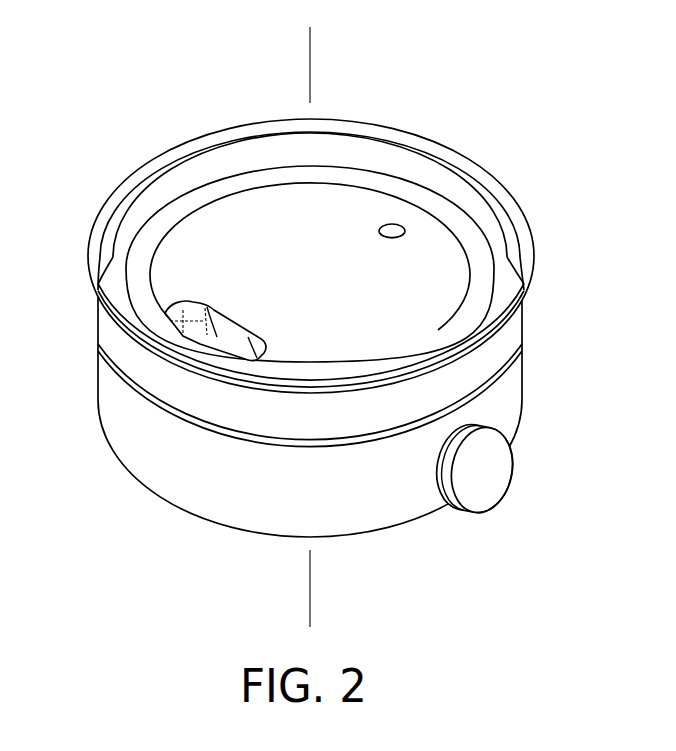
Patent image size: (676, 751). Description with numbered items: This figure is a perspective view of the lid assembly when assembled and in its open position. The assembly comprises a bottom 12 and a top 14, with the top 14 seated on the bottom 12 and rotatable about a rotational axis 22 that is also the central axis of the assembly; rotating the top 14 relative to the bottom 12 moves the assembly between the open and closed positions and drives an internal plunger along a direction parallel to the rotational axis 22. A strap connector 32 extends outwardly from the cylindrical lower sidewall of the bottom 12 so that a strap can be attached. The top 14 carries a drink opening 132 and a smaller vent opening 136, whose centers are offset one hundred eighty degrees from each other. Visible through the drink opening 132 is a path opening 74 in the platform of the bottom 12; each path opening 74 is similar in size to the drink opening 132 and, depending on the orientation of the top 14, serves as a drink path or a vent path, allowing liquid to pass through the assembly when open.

The bottom 12 is at (105, 413).
The top 14 is at (100, 240).
The rotational axis 22 is at (310, 585).
The strap connector 32 is at (490, 477).
The path opening 74 is at (208, 340).
The drink opening 132 is at (150, 315).
The vent opening 136 is at (393, 222).